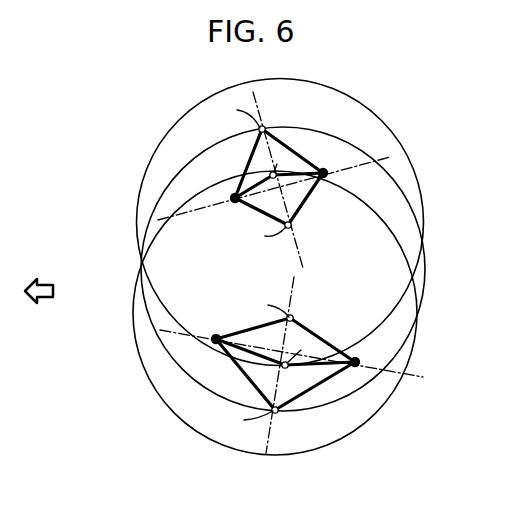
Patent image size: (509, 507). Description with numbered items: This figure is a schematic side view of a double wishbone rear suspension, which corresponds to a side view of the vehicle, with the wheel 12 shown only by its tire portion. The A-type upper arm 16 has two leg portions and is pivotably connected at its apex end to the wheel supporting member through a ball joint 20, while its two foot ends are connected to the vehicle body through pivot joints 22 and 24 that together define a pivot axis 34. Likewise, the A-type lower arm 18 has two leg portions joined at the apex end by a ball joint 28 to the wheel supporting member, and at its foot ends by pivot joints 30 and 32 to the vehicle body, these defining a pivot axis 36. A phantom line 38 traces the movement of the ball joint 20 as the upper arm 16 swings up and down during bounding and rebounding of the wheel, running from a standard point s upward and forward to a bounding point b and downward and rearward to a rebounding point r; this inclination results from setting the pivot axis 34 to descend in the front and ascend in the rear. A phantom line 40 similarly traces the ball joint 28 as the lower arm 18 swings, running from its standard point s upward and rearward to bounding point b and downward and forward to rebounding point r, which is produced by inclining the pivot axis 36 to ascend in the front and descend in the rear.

The wheel 12 is at (421, 266).
The A-type upper arm 16 is at (272, 174).
The A-type lower arm 18 is at (329, 363).
The ball joint 20 is at (270, 175).
The pivot joint 22 is at (235, 201).
The pivot joint 24 is at (323, 177).
The ball joint 28 is at (288, 369).
The pivot joint 30 is at (216, 336).
The pivot joint 32 is at (358, 361).
The pivot axis 34 is at (365, 158).
The pivot axis 36 is at (404, 370).
The phantom line 38 is at (262, 99).
The phantom line 40 is at (263, 442).